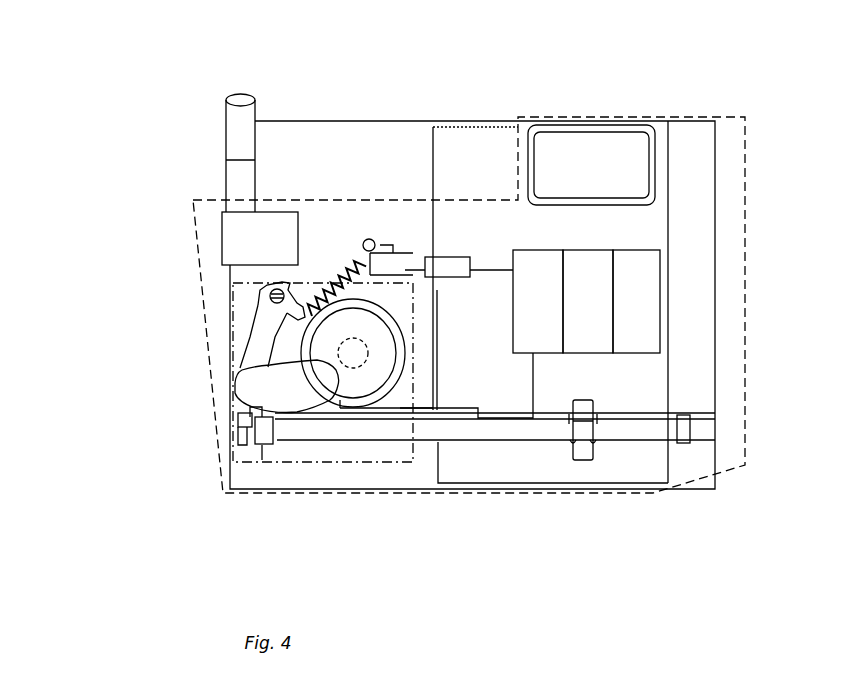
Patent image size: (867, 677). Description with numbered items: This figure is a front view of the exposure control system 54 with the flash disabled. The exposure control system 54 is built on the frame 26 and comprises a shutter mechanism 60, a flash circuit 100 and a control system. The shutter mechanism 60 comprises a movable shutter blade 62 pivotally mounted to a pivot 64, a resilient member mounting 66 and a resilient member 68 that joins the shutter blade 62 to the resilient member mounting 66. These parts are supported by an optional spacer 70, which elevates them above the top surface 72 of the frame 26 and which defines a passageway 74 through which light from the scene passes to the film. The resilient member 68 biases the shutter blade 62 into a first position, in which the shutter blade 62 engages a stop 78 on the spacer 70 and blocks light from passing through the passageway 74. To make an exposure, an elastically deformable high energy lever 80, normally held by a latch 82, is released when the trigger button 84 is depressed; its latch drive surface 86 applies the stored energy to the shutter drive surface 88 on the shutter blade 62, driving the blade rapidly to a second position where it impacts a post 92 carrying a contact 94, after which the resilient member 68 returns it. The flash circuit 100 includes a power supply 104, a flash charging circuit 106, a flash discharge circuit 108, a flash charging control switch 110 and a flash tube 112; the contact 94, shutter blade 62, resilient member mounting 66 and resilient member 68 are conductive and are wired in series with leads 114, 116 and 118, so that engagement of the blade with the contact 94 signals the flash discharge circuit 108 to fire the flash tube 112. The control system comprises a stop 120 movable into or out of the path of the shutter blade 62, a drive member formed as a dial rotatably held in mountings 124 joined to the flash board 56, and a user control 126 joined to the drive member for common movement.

The frame 26 is at (718, 465).
The exposure control system 54 is at (775, 130).
The flash board 56 is at (663, 180).
The shutter mechanism 60 is at (337, 460).
The shutter blade 62 is at (287, 386).
The pivot 64 is at (260, 300).
The resilient member mounting 66 is at (383, 247).
The resilient member 68 is at (327, 268).
The spacer 70 is at (283, 297).
The top surface 72 is at (338, 128).
The passageway 74 is at (367, 353).
The stop 78 is at (240, 372).
The high energy lever 80 is at (260, 238).
The latch 82 is at (240, 186).
The trigger button 84 is at (240, 127).
The latch drive surface 86 is at (290, 283).
The shutter drive surface 88 is at (273, 280).
The post 92 is at (233, 423).
The contact 94 is at (264, 447).
The flash circuit 100 is at (626, 117).
The power supply 104 is at (636, 301).
The flash charging circuit 106 is at (588, 301).
The flash discharge circuit 108 is at (538, 301).
The flash charging control switch 110 is at (600, 453).
The flash tube 112 is at (591, 165).
The lead 114 is at (483, 268).
The lead 116 is at (537, 380).
The lead 118 is at (418, 415).
The stop 120 is at (272, 450).
The mounting 124 is at (688, 443).
The user control 126 is at (585, 460).